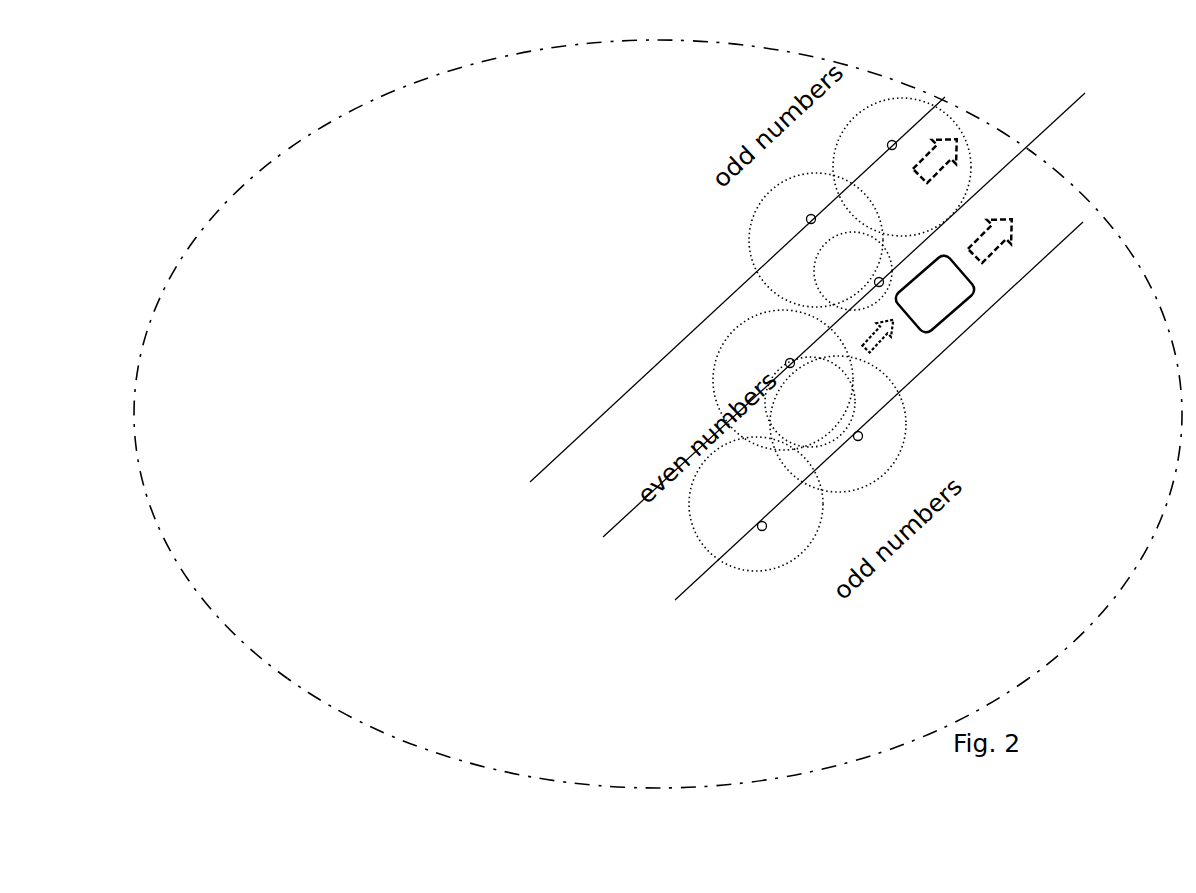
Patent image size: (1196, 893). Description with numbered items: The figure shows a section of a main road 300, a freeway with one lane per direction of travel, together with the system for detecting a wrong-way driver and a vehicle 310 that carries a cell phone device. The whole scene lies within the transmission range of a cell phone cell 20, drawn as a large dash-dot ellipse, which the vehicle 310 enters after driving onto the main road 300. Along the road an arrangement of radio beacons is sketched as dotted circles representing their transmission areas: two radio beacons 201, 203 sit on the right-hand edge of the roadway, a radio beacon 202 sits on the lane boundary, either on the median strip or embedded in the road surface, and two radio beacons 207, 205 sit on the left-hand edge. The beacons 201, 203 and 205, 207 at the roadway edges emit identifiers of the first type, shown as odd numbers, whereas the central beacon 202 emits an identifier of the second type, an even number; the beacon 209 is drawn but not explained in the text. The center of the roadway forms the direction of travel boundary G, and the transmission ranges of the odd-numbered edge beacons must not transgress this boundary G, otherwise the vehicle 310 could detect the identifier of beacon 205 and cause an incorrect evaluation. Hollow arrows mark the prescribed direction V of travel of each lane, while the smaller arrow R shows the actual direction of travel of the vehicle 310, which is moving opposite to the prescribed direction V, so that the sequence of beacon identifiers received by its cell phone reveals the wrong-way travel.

The cell phone cell 20 is at (1163, 521).
The section of a main road 300 is at (700, 354).
The radio beacon 201 is at (766, 530).
The radio beacon 202 is at (790, 359).
The radio beacon 203 is at (862, 441).
The radio beacon 205 is at (889, 142).
The radio beacon 207 is at (810, 215).
The detected object position 209 is at (854, 271).
The vehicle 310 is at (935, 293).
The direction of travel boundary G is at (1072, 110).
The prescribed direction of travel V is at (972, 120).
The direction of travel of the vehicle R is at (902, 352).